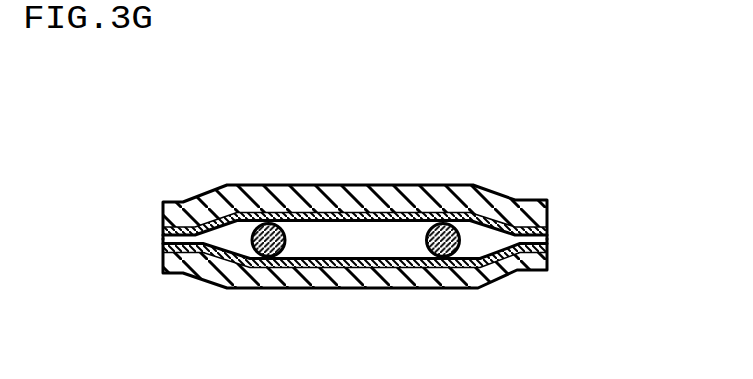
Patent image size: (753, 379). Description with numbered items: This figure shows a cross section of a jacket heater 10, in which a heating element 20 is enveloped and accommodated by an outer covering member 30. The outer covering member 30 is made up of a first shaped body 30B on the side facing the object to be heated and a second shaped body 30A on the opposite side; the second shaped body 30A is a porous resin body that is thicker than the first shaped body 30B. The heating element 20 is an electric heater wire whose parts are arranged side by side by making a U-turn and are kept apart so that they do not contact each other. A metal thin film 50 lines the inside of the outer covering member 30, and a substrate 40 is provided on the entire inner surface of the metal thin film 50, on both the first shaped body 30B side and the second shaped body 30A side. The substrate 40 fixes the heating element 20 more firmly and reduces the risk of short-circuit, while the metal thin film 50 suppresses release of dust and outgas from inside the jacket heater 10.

The jacket heater 10 is at (424, 206).
The heating element 20 is at (274, 258).
The outer covering member 30 is at (424, 241).
The second shaped body 30A is at (547, 205).
The first shaped body 30B is at (547, 263).
The substrate 40 is at (297, 214).
The metal thin film 50 is at (349, 220).